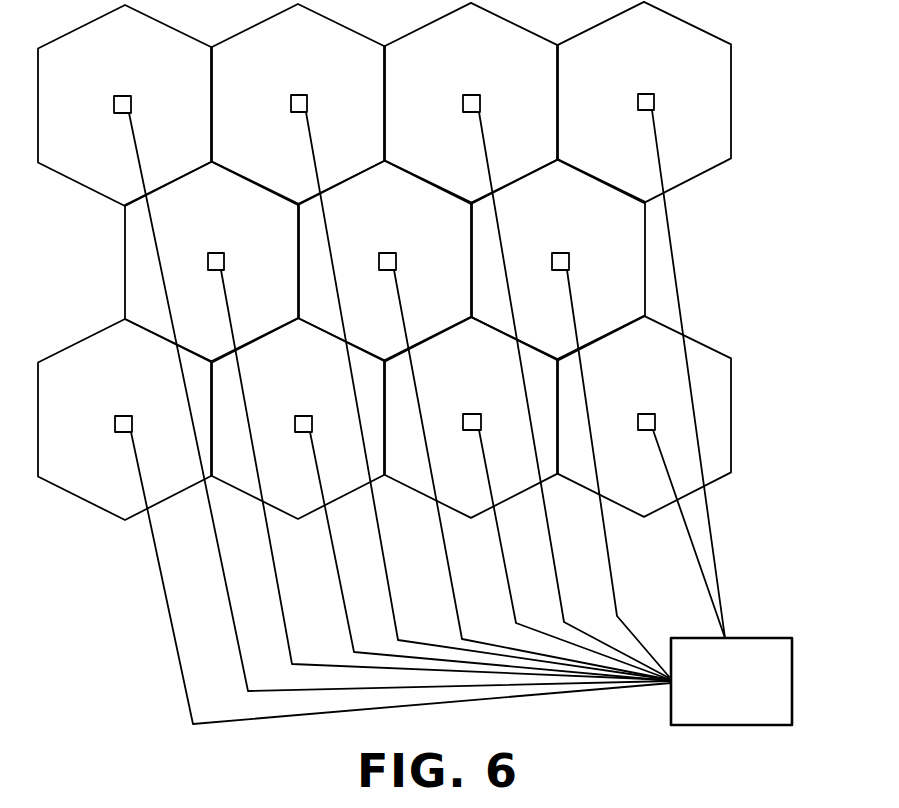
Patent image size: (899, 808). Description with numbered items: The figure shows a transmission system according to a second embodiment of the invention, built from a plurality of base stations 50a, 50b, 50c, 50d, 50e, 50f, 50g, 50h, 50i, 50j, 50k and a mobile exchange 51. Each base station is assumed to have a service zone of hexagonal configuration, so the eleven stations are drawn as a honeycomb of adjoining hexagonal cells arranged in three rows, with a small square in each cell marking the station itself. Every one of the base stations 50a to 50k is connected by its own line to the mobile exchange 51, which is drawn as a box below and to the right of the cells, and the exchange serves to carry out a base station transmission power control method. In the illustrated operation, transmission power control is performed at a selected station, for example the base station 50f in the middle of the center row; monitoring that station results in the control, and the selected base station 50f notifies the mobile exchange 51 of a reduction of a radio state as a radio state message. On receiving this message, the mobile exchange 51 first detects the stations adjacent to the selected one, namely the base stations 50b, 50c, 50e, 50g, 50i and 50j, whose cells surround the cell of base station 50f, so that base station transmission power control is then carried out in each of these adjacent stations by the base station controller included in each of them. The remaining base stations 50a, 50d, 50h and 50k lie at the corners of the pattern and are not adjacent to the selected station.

The base station 50a is at (124, 96).
The base station 50b is at (301, 95).
The base station 50c is at (473, 95).
The base station 50d is at (648, 94).
The base station 50e is at (218, 253).
The selected base station 50f is at (389, 253).
The base station 50g is at (562, 253).
The base station 50h is at (125, 416).
The base station 50i is at (305, 416).
The base station 50j is at (473, 414).
The base station 50k is at (648, 414).
The mobile exchange 51 is at (761, 637).